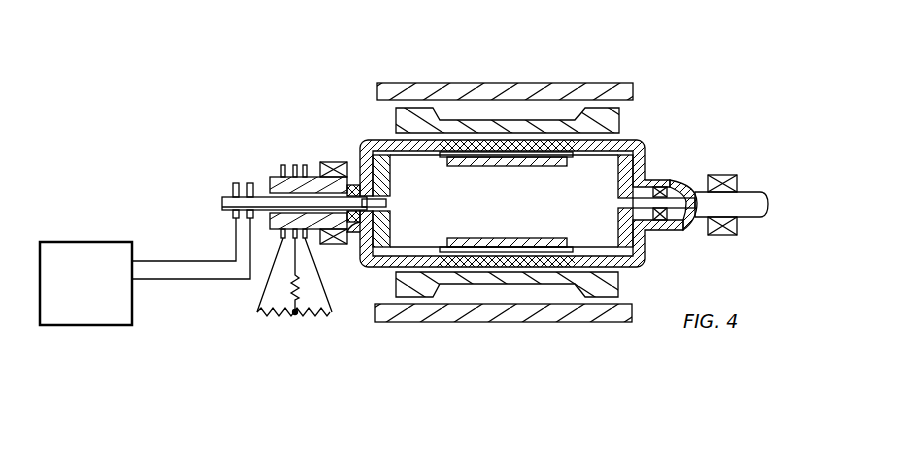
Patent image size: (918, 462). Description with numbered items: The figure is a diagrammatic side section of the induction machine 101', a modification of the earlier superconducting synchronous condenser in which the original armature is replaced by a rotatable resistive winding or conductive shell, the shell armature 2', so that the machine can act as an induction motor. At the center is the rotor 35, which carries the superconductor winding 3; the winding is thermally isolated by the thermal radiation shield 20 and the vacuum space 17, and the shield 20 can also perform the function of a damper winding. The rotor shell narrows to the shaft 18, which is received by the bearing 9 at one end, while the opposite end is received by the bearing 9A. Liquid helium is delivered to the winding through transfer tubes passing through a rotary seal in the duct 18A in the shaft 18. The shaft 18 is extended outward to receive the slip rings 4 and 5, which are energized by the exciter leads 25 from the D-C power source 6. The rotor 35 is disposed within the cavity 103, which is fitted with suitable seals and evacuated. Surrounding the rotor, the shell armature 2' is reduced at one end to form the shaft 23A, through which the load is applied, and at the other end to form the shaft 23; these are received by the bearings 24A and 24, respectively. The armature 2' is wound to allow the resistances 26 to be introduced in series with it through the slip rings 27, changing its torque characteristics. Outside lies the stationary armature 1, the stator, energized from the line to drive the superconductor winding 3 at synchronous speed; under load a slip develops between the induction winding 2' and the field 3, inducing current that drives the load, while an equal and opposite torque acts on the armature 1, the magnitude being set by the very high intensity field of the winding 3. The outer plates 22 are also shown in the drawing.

The outer magnetic plate 22 is at (587, 83).
The armature 1 is at (620, 122).
The shell armature 2' is at (529, 193).
The rotor 35 is at (365, 268).
The duct 18A is at (386, 199).
The shaft 18 is at (222, 196).
The slip ring 4 is at (236, 183).
The slip ring 5 is at (250, 183).
The bearing 24 is at (331, 162).
The shaft 23 is at (353, 185).
The slip rings 27 is at (305, 165).
The bearing 9 is at (378, 219).
The thermal radiation shield 20 is at (457, 157).
The superconductor winding 3 is at (556, 166).
The vacuum space 17 is at (520, 217).
The cavity 103 is at (642, 165).
The bearing 9A is at (672, 184).
The shaft 23A is at (758, 192).
The bearing 24A is at (722, 175).
The D-C power source 6 is at (90, 242).
The exciter leads 25 is at (181, 279).
The resistances 26 is at (289, 327).
The induction machine 101' is at (383, 363).